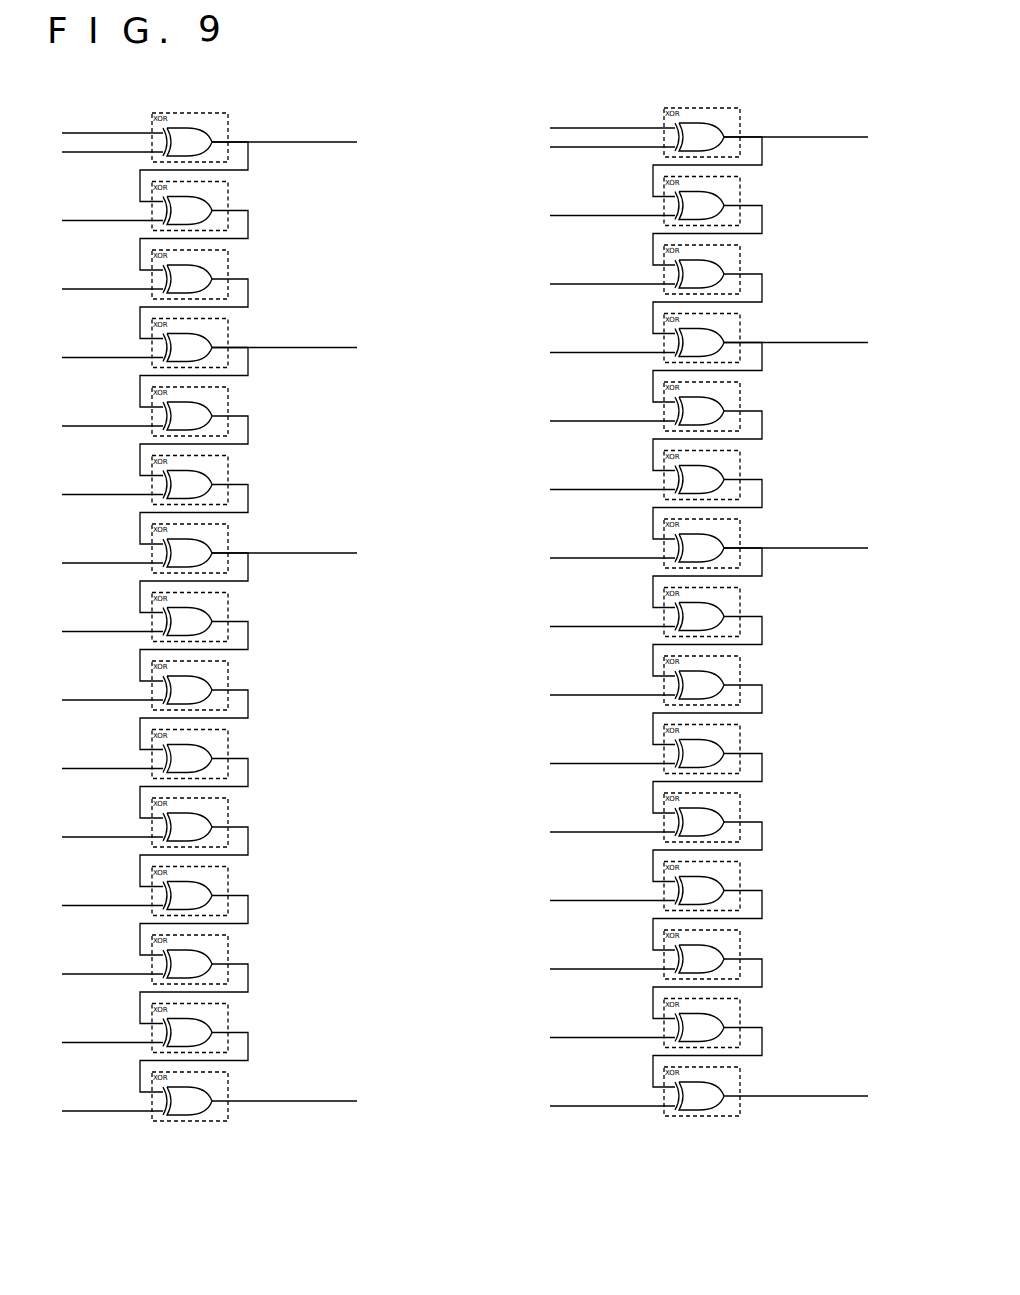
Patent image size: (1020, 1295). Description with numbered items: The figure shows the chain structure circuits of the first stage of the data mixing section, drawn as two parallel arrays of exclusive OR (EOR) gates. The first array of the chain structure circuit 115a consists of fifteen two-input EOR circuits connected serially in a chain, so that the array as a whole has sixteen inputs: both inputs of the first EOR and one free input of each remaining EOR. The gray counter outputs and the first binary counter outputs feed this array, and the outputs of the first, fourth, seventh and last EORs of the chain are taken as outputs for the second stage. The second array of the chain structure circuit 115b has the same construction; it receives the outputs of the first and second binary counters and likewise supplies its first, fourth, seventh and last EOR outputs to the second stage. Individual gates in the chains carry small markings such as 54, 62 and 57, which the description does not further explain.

The first array of the chain structure circuit 115a is at (209, 667).
The second array of the chain structure circuit 115b is at (697, 1137).
The XOR gate 54 is at (190, 617).
The XOR gate 62 is at (190, 685).
The XOR gate 57 is at (190, 1096).